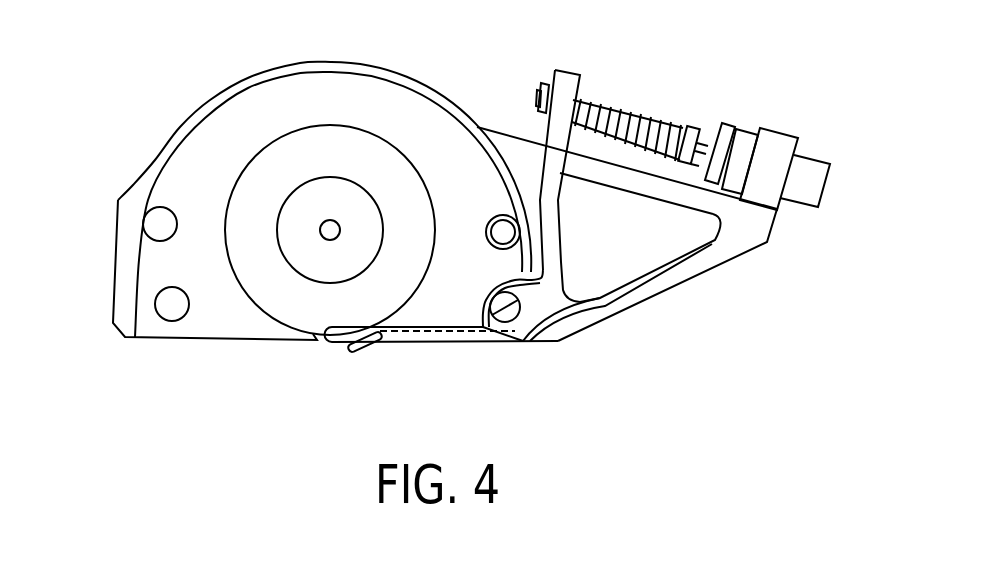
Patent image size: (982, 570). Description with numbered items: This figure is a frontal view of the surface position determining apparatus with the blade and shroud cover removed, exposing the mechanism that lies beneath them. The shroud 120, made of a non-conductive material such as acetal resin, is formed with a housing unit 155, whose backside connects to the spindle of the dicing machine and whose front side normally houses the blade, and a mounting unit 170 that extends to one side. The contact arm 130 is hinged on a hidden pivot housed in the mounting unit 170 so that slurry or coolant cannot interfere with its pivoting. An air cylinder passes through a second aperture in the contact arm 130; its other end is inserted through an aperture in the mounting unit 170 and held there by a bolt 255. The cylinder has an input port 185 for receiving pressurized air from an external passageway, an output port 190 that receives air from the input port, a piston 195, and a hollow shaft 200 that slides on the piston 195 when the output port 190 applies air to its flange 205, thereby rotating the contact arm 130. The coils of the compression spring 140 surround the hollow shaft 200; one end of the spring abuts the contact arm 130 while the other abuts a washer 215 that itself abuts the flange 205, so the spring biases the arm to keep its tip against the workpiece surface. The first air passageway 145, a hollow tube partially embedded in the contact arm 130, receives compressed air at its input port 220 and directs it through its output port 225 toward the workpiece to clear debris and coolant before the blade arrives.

The shroud 120 is at (132, 180).
The contact arm 130 is at (566, 68).
The compression spring 140 is at (658, 124).
The first air passageway 145 is at (547, 335).
The housing unit 155 is at (222, 320).
The mounting unit 170 is at (722, 265).
The input port 185 is at (830, 183).
The output port 190 is at (725, 122).
The piston 195 is at (692, 127).
The hollow shaft 200 is at (602, 102).
The flange 205 is at (694, 163).
The washer 215 is at (670, 167).
The input port 220 is at (641, 302).
The output port 225 is at (343, 351).
The bolt 255 is at (767, 128).